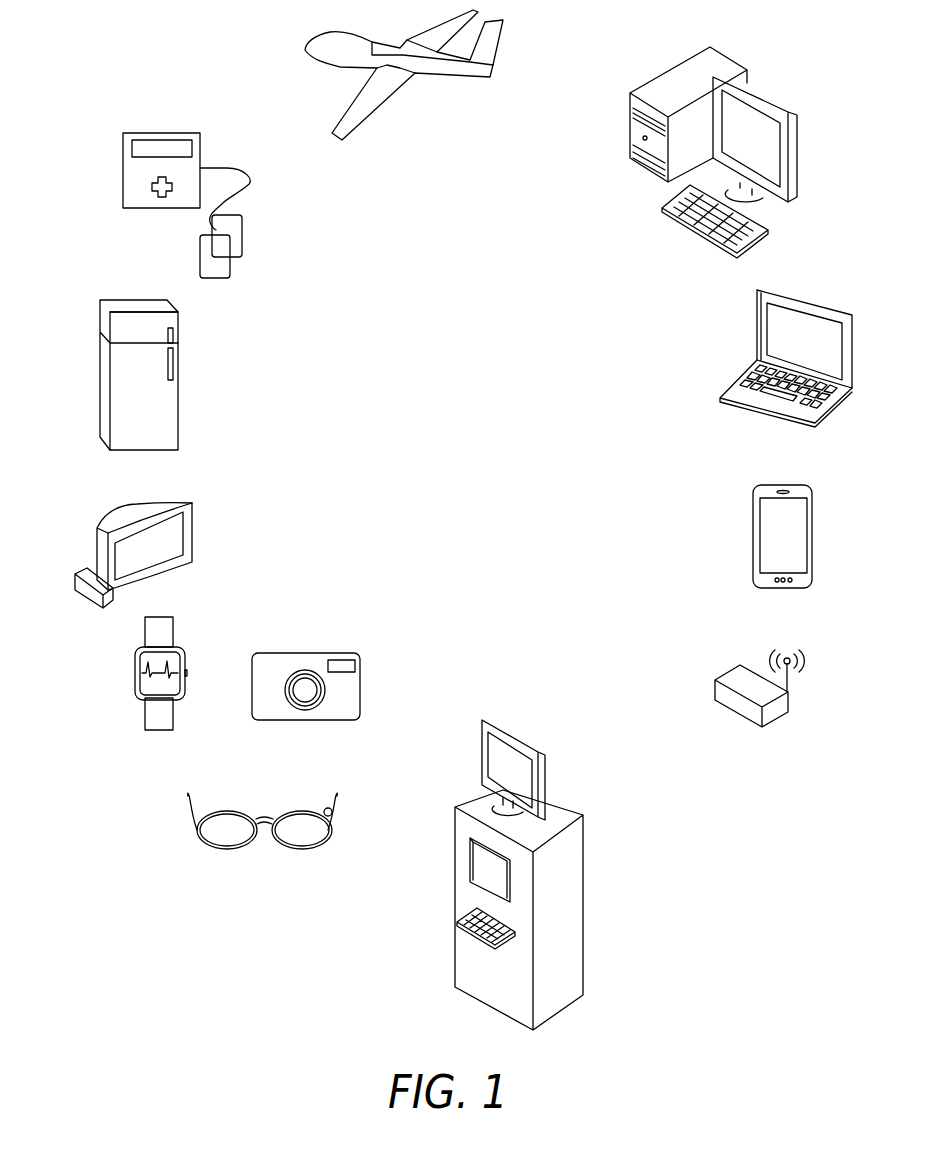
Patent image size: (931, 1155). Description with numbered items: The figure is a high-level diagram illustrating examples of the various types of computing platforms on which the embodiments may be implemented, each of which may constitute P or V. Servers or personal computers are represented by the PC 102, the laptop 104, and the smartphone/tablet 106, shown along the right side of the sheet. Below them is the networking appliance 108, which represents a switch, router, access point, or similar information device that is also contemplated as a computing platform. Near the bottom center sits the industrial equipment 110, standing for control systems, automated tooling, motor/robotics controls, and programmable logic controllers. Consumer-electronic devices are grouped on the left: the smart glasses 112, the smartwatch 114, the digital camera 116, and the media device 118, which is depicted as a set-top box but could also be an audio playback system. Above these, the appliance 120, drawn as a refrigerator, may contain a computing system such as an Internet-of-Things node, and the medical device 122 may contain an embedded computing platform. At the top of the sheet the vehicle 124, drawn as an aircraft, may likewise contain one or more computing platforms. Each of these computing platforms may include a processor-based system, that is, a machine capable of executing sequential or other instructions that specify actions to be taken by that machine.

The PC 102 is at (630, 125).
The laptop 104 is at (757, 330).
The smartphone/tablet 106 is at (754, 522).
The networking appliance 108 is at (715, 687).
The industrial equipment 110 is at (455, 947).
The smart glasses 112 is at (197, 830).
The smartwatch 114 is at (135, 672).
The digital camera 116 is at (310, 653).
The media device 118 is at (75, 582).
The appliance 120 is at (100, 405).
The medical device 122 is at (123, 182).
The vehicle 124 is at (306, 48).